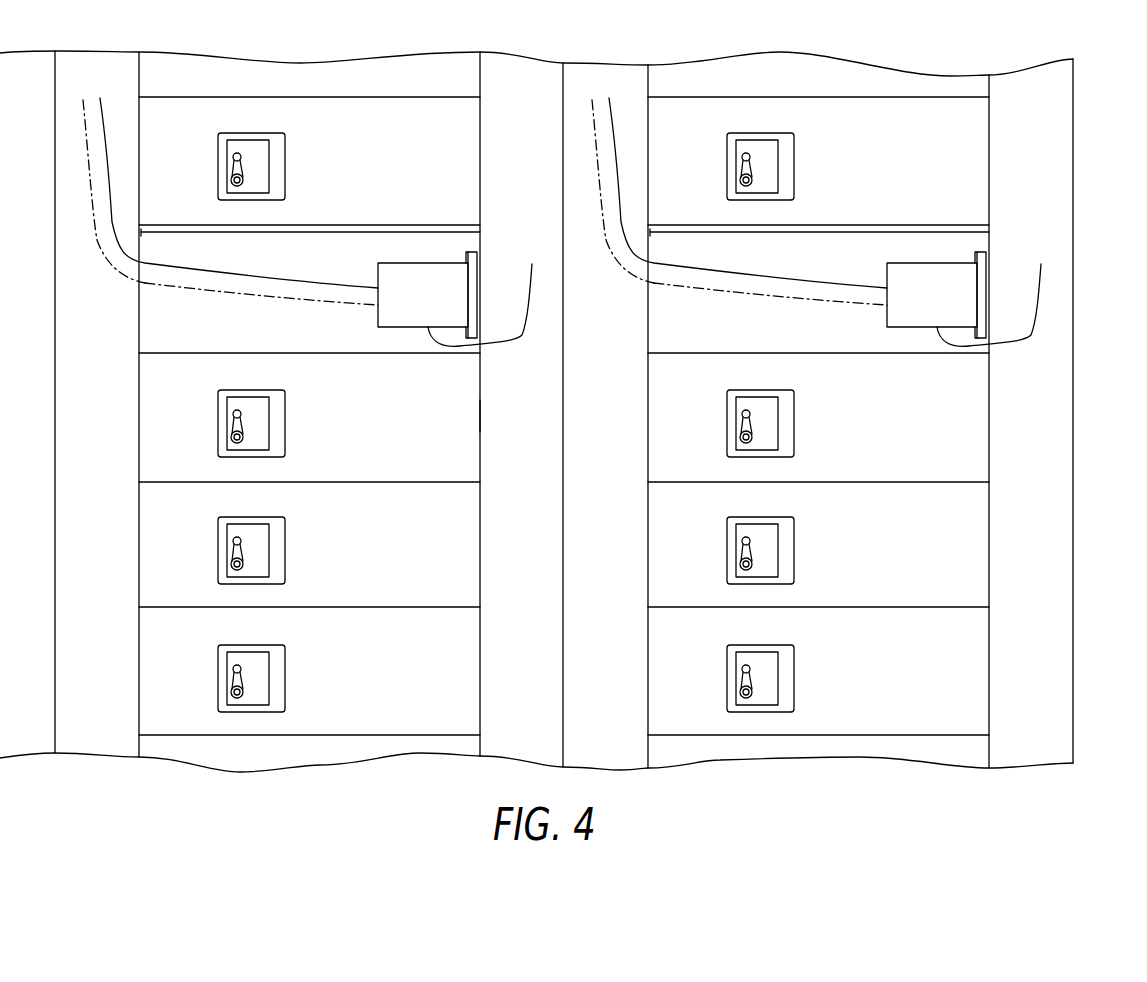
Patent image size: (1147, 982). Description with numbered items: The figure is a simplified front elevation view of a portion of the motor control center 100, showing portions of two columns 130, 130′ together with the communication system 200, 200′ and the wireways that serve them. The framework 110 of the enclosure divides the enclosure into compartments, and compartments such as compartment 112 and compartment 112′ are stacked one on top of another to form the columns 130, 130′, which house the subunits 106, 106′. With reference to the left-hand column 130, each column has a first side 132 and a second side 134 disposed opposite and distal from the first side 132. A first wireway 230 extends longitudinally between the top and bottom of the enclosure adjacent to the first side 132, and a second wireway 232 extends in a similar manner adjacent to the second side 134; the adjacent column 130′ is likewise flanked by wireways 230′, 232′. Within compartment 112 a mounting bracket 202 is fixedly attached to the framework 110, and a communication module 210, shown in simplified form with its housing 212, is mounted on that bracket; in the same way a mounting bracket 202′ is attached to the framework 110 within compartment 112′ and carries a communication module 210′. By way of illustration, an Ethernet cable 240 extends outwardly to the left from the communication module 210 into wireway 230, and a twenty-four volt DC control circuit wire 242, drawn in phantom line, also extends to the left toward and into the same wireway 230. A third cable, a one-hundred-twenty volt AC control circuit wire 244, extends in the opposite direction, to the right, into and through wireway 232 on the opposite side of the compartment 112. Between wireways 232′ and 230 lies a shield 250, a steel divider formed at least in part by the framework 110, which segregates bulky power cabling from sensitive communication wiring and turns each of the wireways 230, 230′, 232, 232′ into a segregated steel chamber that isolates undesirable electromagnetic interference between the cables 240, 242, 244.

The motor control center 100 is at (71, 809).
The subunit 106 is at (174, 111).
The subunit 106′ is at (818, 90).
The framework 110 is at (140, 318).
The compartment 112 is at (160, 337).
The compartment 112′ is at (792, 352).
The column 130 is at (132, 609).
The column 130′ is at (787, 671).
The first side 132 is at (139, 385).
The second side 134 is at (480, 428).
The communication system 200 is at (389, 366).
The communication system 200′ is at (831, 283).
The mounting bracket 202 is at (468, 237).
The mounting bracket 202′ is at (1014, 240).
The communication module 210 is at (406, 243).
The communication module 210′ is at (818, 198).
The housing 212 is at (396, 272).
The first wireway 230 is at (117, 542).
The wireway 230′ is at (581, 416).
The second wireway 232 is at (505, 570).
The wireway 232′ is at (1061, 421).
The Ethernet cable 240 is at (220, 276).
The 24 VDC control circuit wire 242 is at (310, 306).
The 120 VAC control circuit wire 244 is at (534, 282).
The shield 250 is at (565, 428).